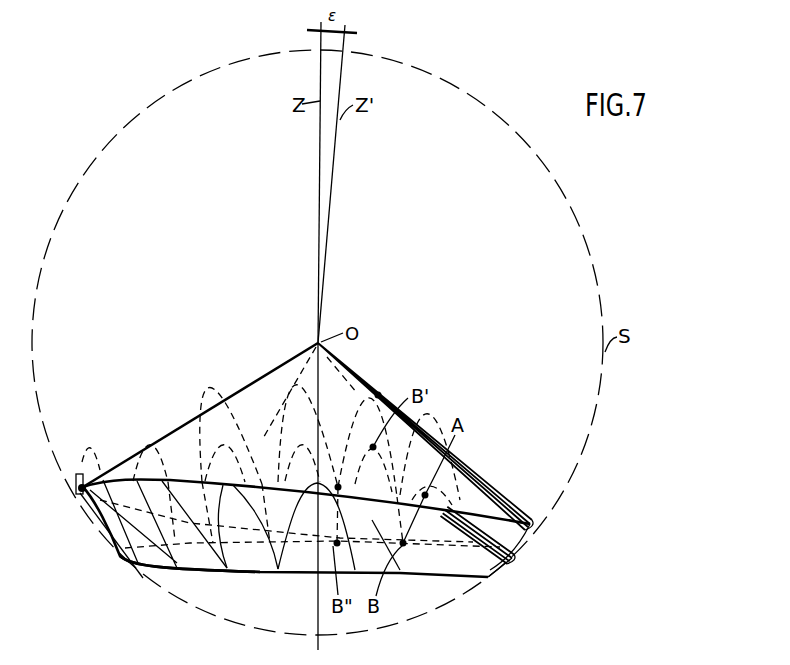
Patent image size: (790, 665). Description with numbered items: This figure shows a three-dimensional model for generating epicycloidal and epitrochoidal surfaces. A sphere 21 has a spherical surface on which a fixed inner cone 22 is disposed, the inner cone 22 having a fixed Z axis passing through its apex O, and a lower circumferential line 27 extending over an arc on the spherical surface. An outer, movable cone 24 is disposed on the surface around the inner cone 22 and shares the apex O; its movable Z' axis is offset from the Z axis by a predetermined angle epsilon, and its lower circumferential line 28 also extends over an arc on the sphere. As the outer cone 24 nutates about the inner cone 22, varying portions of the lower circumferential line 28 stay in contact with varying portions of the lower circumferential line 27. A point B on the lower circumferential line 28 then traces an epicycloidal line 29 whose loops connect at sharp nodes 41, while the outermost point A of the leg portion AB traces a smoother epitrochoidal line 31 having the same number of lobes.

The sphere 21 is at (80, 183).
The fixed inner cone 22 is at (463, 558).
The outer, movable cone 24 is at (172, 428).
The lower circumferential line of the inner cone 27 is at (438, 572).
The lower circumferential line of the outer cone 28 is at (447, 510).
The epicycloidal line 29 is at (297, 513).
The epitrochoidal line 31 is at (237, 405).
The nodes 41 is at (270, 575).